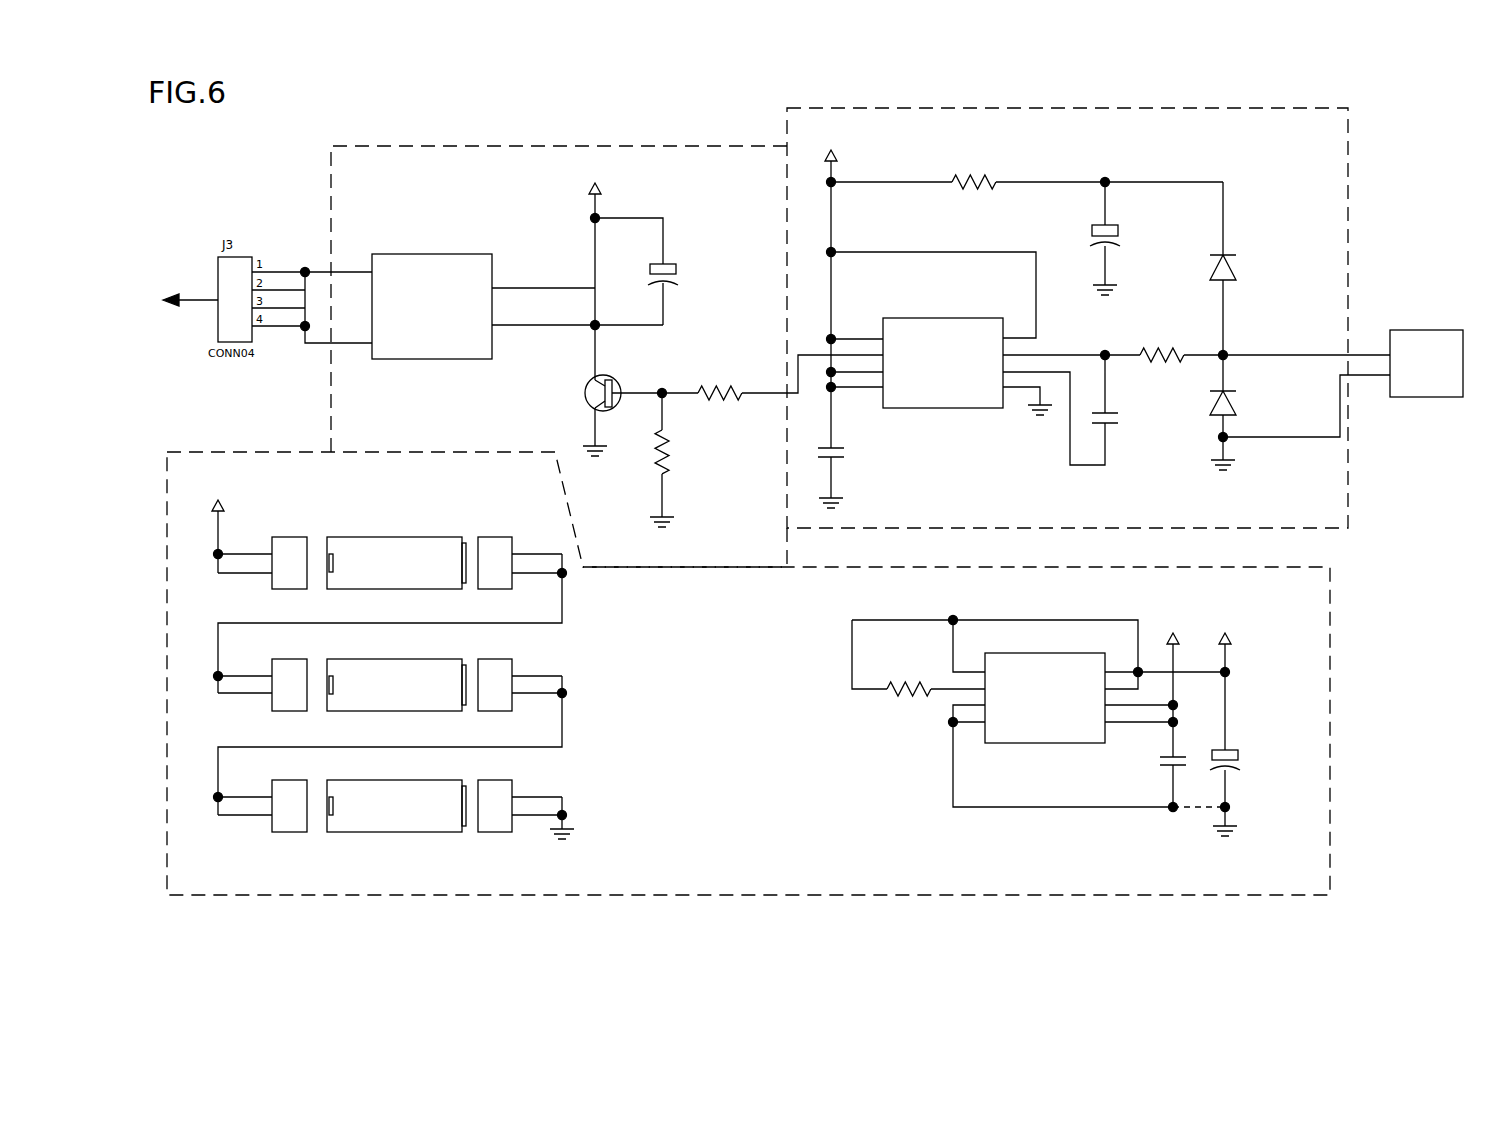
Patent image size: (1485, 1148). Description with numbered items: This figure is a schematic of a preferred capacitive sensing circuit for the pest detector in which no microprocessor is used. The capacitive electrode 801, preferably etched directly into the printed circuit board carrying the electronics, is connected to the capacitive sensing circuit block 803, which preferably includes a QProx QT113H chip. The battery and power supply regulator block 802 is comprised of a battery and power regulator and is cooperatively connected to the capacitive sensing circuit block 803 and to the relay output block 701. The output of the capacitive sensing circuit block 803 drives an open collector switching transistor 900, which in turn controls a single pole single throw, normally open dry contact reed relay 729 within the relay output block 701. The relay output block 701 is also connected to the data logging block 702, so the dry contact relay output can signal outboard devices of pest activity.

The relay output block 701 is at (483, 155).
The data logging block 702 is at (188, 279).
The dry contact reed relay 729 is at (383, 254).
The capacitive electrode 801 is at (1425, 330).
The power block 802 is at (757, 885).
The capacitive sensing circuit block 803 is at (1040, 117).
The open collector switching transistor 900 is at (617, 380).